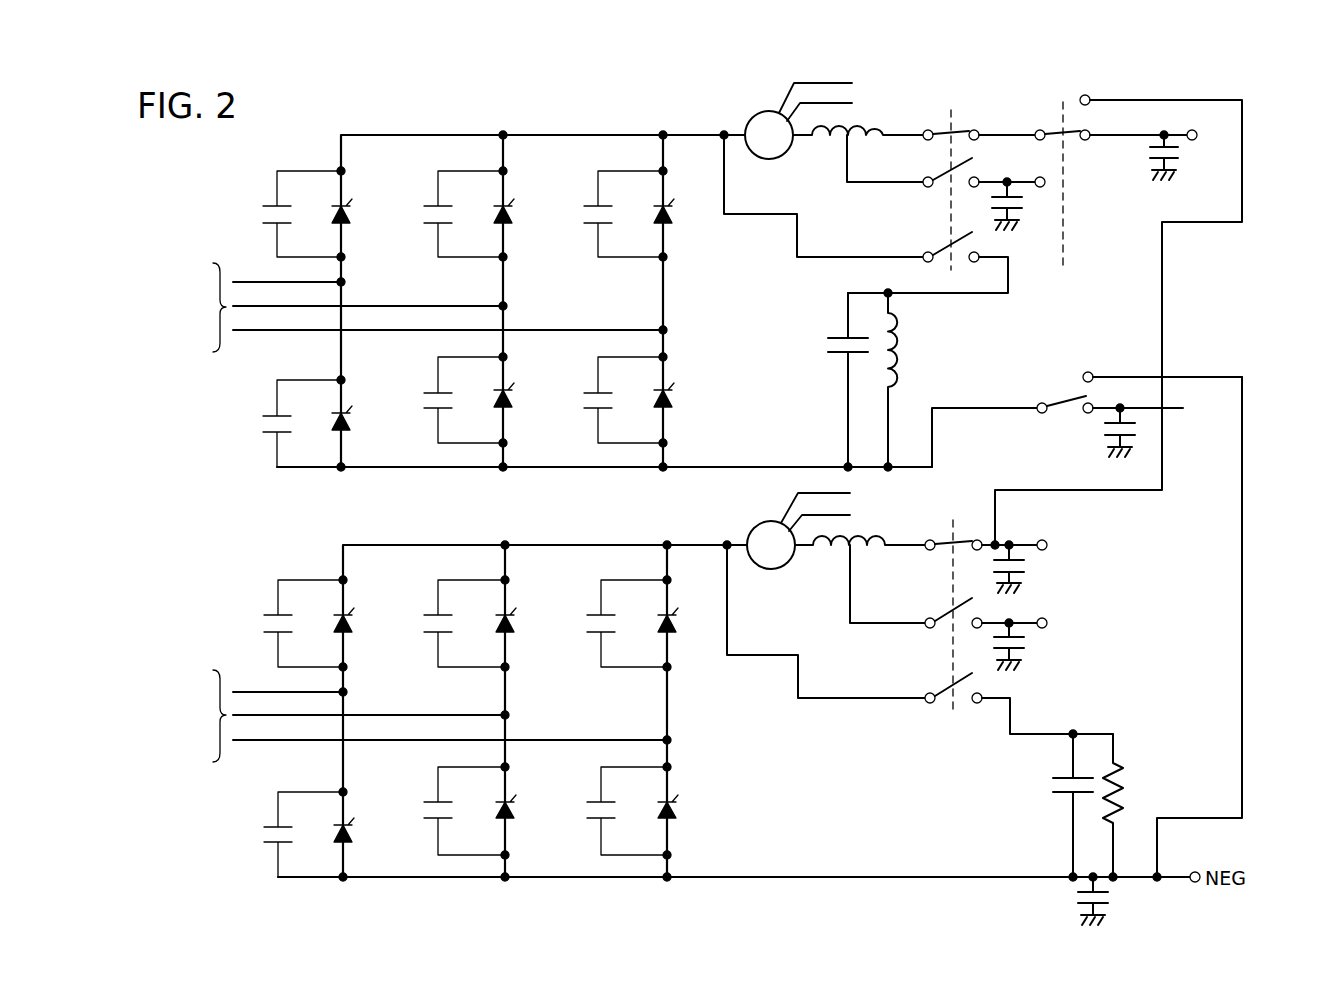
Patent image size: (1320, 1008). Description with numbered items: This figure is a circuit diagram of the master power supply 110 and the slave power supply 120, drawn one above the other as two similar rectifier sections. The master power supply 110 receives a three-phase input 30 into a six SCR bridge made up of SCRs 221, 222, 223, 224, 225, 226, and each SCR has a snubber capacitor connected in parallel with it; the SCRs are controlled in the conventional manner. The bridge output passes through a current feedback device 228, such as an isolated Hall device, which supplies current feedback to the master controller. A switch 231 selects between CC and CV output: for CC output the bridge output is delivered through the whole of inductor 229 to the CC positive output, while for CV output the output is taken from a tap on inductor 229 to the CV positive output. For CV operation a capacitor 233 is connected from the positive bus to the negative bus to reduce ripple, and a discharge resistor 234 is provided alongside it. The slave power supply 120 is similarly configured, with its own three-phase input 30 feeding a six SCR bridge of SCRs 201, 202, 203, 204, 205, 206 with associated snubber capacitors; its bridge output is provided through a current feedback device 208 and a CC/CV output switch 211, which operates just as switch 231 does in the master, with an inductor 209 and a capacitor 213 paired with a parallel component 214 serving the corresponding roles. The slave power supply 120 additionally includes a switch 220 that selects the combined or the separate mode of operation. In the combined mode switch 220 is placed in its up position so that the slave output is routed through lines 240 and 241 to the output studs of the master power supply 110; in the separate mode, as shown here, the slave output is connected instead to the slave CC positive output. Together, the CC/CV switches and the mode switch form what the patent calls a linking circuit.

The slave power supply 120 is at (503, 115).
The master power supply 110 is at (505, 532).
The three-phase input lines 30 is at (428, 512).
The SCR 201 is at (348, 215).
The SCR 202 is at (510, 215).
The SCR 203 is at (670, 213).
The SCR 204 is at (672, 400).
The SCR 205 is at (512, 397).
The SCR 206 is at (350, 430).
The current feedback device 208 is at (750, 118).
The inductor 209 is at (884, 126).
The CC/CV output switch 211 is at (963, 117).
The capacitor 213 is at (838, 332).
The inductor 214 is at (900, 353).
The switch 220 is at (1053, 100).
The line 240 is at (1244, 150).
The line 241 is at (1210, 375).
The SCR 221 is at (350, 626).
The SCR 222 is at (512, 626).
The SCR 223 is at (672, 622).
The SCR 224 is at (678, 808).
The SCR 225 is at (513, 812).
The SCR 226 is at (350, 838).
The current feedback device 228 is at (761, 524).
The inductor 229 is at (880, 536).
The switch 231 is at (965, 516).
The capacitor 233 is at (1064, 779).
The discharge resistor 234 is at (1126, 783).